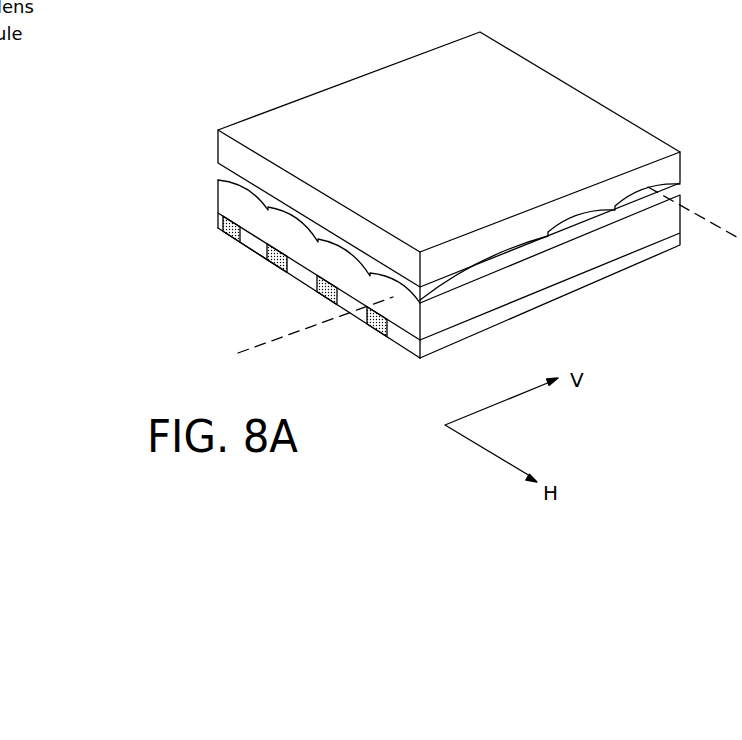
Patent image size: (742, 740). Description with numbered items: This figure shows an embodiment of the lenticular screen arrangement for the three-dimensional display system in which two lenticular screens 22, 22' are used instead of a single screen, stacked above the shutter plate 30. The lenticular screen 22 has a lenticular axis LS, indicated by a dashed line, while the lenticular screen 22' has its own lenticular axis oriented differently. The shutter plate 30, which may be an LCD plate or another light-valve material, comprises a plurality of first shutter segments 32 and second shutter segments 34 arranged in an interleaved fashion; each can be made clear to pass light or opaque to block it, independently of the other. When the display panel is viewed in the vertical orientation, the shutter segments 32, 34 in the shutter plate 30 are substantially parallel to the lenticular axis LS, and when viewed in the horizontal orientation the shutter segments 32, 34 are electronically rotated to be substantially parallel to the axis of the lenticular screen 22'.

The lenticular screen 22 is at (293, 236).
The lenticular screen 22' is at (579, 207).
The shutter plate 30 is at (214, 220).
The first shutter segments 32 is at (228, 230).
The second shutter segments 34 is at (256, 237).
The lenticular axis LS is at (308, 328).